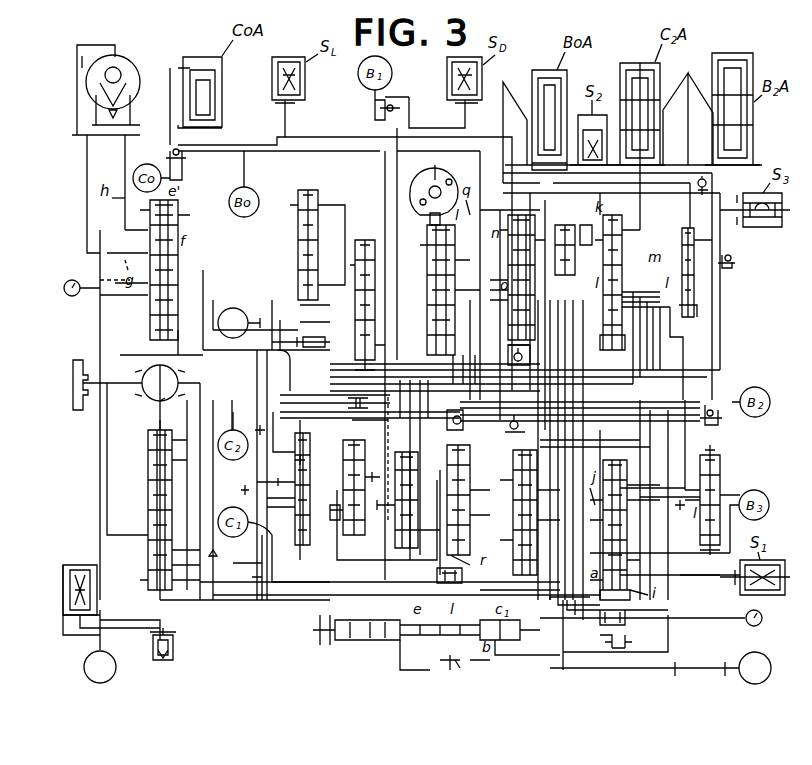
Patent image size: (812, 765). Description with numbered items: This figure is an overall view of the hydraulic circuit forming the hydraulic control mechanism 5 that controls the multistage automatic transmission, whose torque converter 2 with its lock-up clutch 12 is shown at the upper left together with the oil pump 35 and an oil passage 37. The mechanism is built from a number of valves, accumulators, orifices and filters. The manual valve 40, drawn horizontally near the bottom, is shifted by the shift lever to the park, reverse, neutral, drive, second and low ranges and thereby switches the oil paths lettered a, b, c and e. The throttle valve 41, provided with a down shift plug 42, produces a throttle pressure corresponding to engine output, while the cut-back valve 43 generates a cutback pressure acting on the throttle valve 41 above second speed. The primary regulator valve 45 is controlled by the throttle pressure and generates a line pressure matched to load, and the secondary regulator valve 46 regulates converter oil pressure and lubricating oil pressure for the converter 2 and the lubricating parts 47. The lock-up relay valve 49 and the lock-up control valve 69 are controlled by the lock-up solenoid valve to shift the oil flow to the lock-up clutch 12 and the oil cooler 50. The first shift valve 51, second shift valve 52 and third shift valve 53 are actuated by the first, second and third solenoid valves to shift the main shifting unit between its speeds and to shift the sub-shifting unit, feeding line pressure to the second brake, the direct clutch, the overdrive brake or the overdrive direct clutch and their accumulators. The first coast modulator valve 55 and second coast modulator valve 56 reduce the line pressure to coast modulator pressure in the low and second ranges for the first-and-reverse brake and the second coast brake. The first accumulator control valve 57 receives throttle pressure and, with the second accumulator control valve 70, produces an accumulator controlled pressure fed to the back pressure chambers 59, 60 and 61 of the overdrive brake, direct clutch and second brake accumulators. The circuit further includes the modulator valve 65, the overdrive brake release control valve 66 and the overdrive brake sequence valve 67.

The torque converter 2 is at (128, 60).
The hydraulic control mechanism 5 is at (43, 83).
The lock-up clutch 12 is at (80, 60).
The oil pump 35 is at (160, 398).
The oil passage / pump 37 is at (73, 390).
The manual valve 40 is at (392, 650).
The throttle valve 41 is at (452, 172).
The down shift plug 42 is at (427, 225).
The cut-back valve 43 is at (352, 255).
The primary regulator valve 45 is at (137, 433).
The secondary regulator valve 46 is at (312, 188).
The lubricating parts 47 is at (232, 308).
The lock-up relay valve 49 is at (186, 198).
The oil cooler 50 is at (113, 676).
The first shift valve 51 is at (622, 458).
The second shift valve 52 is at (630, 225).
The third shift valve 53 is at (512, 222).
The first coast modulator valve 55 is at (720, 472).
The second coast modulator valve 56 is at (702, 248).
The first accumulator control valve 57 is at (470, 452).
The back pressure chamber 59 is at (527, 158).
The back pressure chamber 60 is at (675, 119).
The back pressure chamber 61 is at (705, 140).
The SD modulator valve 65 is at (352, 420).
The Bo release control valve 66 is at (408, 452).
The Bo sequence valve 67 is at (568, 222).
The lock-up control valve 69 is at (293, 440).
The second accumulator control valve 70 is at (510, 452).